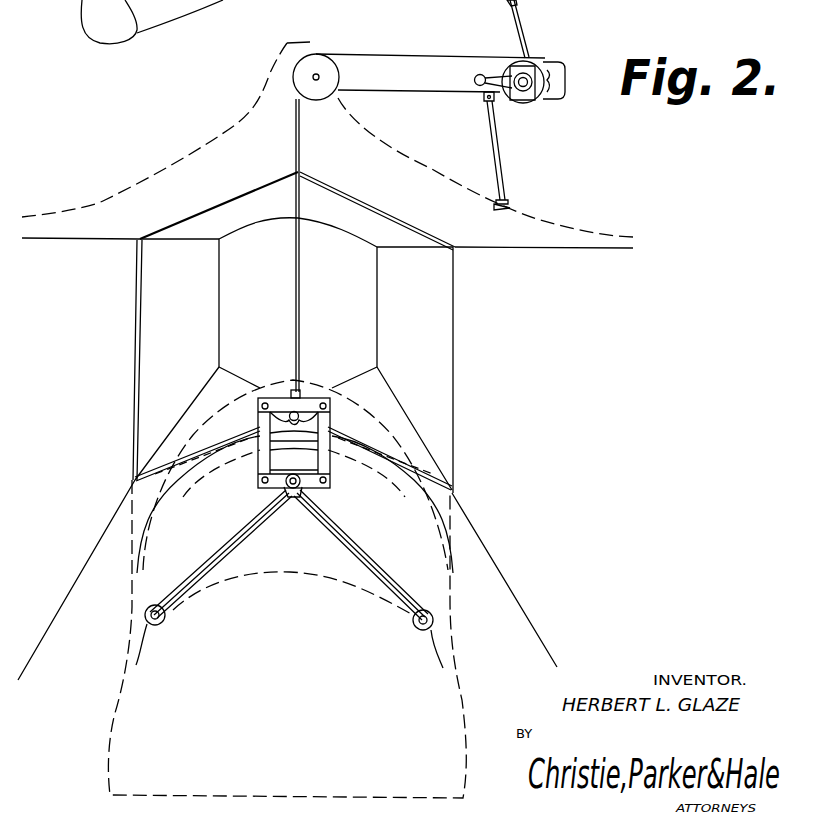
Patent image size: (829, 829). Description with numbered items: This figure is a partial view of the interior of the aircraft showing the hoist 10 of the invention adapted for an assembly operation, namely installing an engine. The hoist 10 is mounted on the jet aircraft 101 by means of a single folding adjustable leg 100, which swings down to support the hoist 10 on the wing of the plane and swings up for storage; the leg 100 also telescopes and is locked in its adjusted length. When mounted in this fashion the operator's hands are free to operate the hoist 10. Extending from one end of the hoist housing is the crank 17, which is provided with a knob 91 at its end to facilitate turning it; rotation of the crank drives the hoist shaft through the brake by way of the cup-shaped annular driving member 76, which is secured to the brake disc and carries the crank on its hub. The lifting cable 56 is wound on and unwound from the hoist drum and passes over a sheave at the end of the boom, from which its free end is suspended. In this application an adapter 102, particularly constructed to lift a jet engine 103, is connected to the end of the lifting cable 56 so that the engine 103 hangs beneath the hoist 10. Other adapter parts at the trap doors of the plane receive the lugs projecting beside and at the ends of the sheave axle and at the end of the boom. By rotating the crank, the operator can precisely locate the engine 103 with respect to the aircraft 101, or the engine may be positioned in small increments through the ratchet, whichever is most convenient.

The hoist 10 is at (433, 54).
The crank 17 is at (506, 72).
The knob 91 is at (474, 80).
The annular driving member 76 is at (521, 15).
The folding adjustable leg 100 is at (505, 160).
The jet aircraft 101 is at (557, 223).
The lifting cable 56 is at (300, 311).
The adapter 102 is at (310, 398).
The jet engine 103 is at (462, 693).